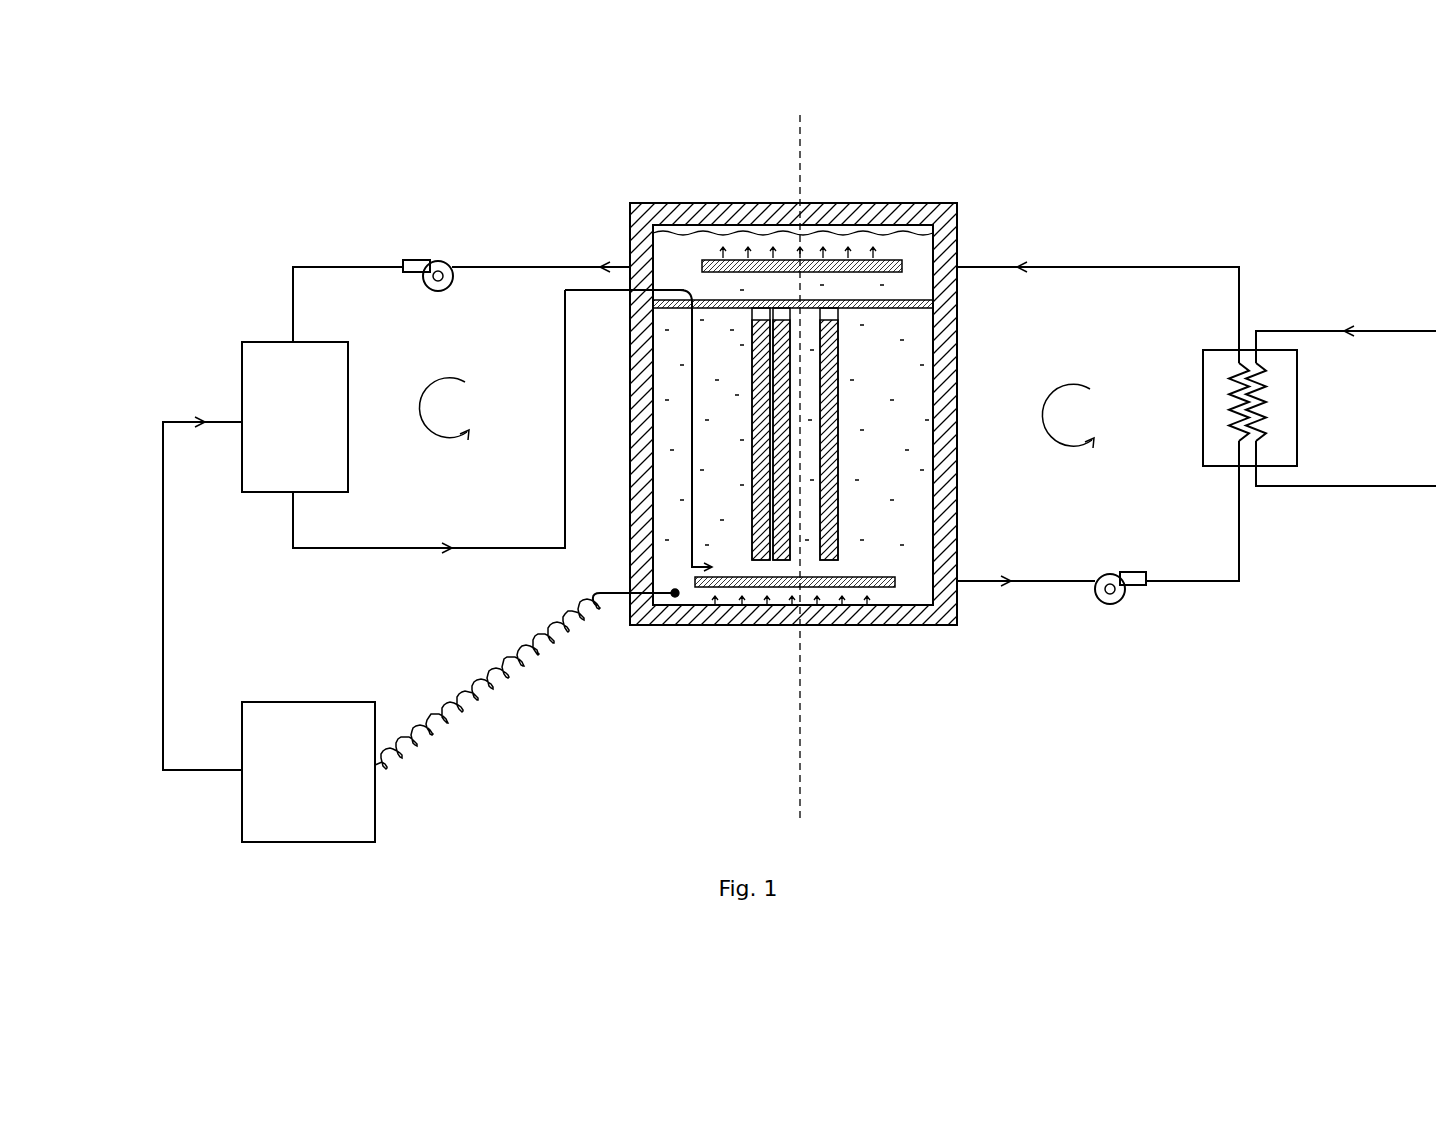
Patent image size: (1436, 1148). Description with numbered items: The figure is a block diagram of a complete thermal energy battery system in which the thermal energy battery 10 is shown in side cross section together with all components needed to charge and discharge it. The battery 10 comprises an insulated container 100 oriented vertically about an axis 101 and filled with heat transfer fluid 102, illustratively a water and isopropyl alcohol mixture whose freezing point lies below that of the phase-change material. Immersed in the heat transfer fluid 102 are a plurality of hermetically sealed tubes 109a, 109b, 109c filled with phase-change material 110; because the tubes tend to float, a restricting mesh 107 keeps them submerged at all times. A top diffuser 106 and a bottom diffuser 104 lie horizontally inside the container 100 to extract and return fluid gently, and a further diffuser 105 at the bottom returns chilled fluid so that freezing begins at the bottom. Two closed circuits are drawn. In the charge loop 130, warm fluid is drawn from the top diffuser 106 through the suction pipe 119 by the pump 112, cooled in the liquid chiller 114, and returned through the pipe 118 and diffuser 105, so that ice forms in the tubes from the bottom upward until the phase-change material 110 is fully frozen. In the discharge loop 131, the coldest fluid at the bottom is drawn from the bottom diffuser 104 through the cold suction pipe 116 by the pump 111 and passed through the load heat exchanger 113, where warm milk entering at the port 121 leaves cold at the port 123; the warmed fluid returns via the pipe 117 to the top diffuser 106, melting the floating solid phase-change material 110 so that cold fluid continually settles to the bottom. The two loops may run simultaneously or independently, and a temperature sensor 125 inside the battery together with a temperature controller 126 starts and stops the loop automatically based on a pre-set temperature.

The thermal energy battery 10 is at (807, 358).
The insulated container 100 is at (727, 202).
The axis 101 is at (800, 157).
The heat transfer fluid 102 is at (898, 522).
The bottom diffuser 104 is at (918, 625).
The diffuser 105 is at (688, 567).
The top diffuser 106 is at (900, 277).
The restricting mesh 107 is at (907, 313).
The tube 109a is at (762, 563).
The tube 109b is at (782, 563).
The tube 109c is at (845, 560).
The phase-change material 110 is at (845, 510).
The pump 111 is at (1127, 602).
The pump 112 is at (452, 258).
The load heat exchanger 113 is at (1203, 440).
The liquid chiller 114 is at (243, 455).
The cold suction pipe 116 is at (1065, 580).
The pipe 117 is at (1168, 264).
The pipe 118 is at (372, 550).
The suction pipe 119 is at (482, 272).
The port 121 is at (1308, 331).
The port 123 is at (1320, 488).
The temperature sensor 125 is at (662, 628).
The temperature controller 126 is at (320, 843).
The charge loop 130 is at (455, 409).
The discharge loop 131 is at (1075, 416).